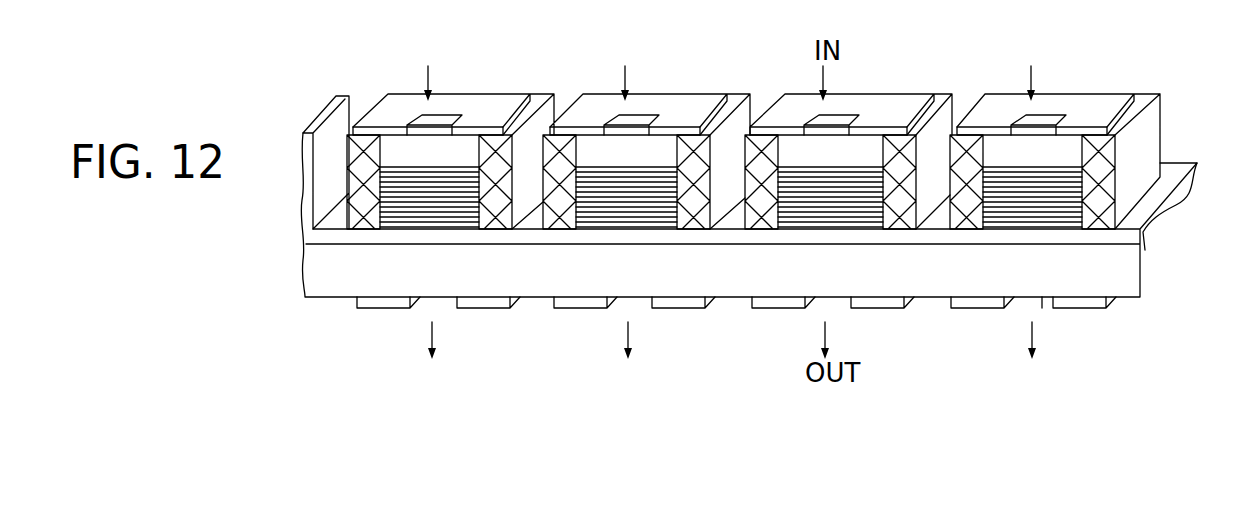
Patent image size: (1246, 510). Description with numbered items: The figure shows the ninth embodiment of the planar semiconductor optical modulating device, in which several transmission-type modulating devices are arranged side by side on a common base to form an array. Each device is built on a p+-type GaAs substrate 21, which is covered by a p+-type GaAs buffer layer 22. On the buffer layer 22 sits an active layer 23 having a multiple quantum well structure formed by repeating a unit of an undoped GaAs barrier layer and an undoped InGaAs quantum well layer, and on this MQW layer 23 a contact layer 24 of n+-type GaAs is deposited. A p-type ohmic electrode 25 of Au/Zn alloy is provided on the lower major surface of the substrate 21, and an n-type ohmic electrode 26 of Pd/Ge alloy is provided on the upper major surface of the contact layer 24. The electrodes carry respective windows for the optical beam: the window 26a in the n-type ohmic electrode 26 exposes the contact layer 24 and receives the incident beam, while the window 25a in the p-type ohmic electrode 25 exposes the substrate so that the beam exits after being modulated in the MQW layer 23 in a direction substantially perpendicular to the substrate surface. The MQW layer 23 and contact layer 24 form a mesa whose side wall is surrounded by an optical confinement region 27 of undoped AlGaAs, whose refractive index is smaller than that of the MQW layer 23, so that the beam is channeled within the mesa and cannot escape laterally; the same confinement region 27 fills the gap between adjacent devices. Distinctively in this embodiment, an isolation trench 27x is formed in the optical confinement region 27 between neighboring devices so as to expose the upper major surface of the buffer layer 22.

The substrate 21 is at (1123, 265).
The buffer layer 22 is at (303, 237).
The active layer 23 is at (1118, 190).
The contact layer 24 is at (1075, 145).
The p-type ohmic electrode 25 is at (1117, 302).
The window 25a is at (1042, 300).
The n-type ohmic electrode 26 is at (1097, 125).
The window 26a is at (1043, 120).
The optical confinement region 27 is at (1102, 208).
The isolation trench 27x is at (965, 96).